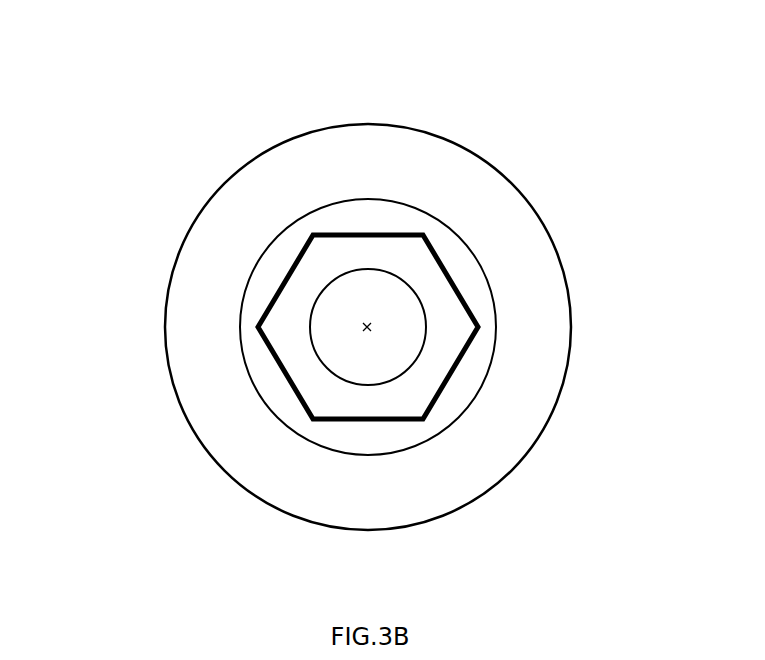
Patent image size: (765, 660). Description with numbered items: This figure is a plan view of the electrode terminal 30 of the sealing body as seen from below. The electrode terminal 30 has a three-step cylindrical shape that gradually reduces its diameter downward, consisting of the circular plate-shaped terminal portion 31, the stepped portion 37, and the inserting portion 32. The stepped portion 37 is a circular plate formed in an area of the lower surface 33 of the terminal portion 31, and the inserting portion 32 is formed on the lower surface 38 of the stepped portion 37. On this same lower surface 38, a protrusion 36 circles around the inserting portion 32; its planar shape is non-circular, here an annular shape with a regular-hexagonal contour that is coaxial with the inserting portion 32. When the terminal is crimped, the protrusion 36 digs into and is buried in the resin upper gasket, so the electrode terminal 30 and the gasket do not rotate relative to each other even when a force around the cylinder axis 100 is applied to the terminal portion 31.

The electrode terminal 30 is at (376, 314).
The terminal portion 31 is at (538, 258).
The inserting portion 32 is at (325, 345).
The lower surface 33 is at (198, 325).
The protrusion 36 is at (364, 233).
The stepped portion 37 is at (485, 309).
The lower surface 38 is at (352, 443).
The cylinder axis 100 is at (374, 330).